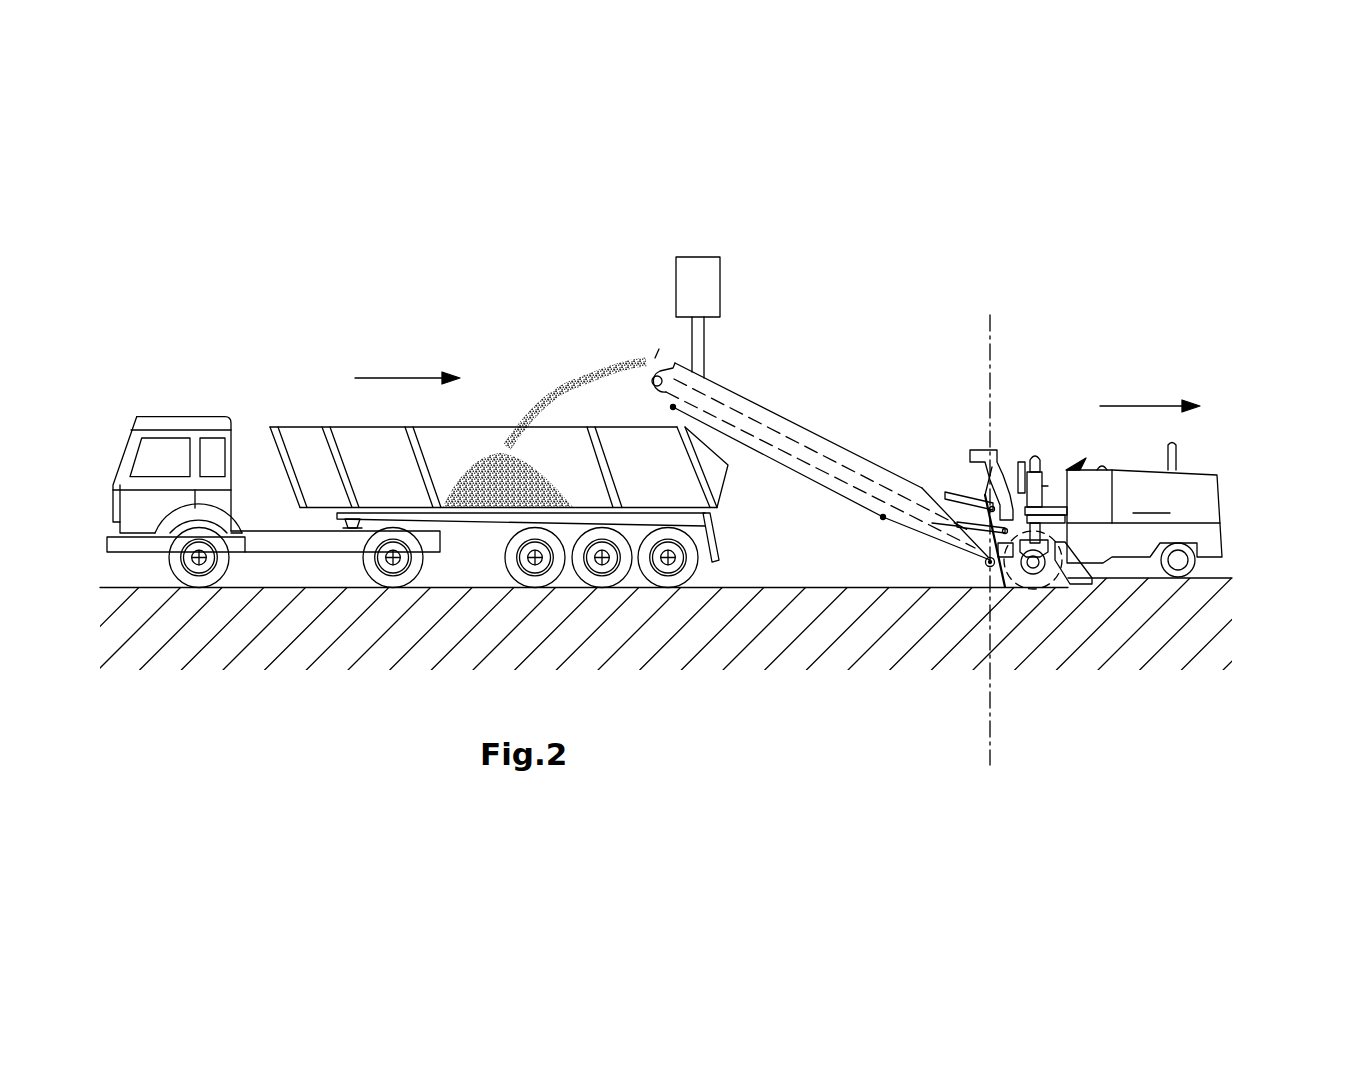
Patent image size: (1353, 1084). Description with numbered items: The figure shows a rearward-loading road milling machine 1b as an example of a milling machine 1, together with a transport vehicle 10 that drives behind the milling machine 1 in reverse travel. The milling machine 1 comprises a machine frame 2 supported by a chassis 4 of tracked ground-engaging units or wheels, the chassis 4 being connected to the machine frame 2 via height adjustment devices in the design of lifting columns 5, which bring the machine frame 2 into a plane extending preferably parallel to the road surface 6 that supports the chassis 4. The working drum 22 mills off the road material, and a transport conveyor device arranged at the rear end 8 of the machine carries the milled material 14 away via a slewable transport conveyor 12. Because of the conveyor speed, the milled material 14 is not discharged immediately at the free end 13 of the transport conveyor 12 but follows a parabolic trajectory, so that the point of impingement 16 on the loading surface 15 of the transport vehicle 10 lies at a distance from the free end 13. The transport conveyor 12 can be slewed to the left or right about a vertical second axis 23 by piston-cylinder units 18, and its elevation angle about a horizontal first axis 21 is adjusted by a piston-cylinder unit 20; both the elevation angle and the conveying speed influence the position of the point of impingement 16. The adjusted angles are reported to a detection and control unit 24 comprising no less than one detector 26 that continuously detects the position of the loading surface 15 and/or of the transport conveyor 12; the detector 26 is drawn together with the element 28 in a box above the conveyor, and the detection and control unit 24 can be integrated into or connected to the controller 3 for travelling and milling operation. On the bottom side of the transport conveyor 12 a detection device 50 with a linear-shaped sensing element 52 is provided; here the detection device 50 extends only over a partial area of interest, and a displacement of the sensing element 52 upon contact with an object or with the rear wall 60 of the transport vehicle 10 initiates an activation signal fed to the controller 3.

The milling machine 1 is at (1095, 531).
The rearward-loading road milling machine 1b is at (1190, 497).
The machine frame 2 is at (1170, 456).
The controller 3 is at (1142, 449).
The detection and control unit 24 is at (1062, 470).
The chassis 4 is at (1232, 564).
The lifting columns 5 is at (1097, 567).
The road surface 6 is at (800, 588).
The rear end 8 is at (952, 440).
The transport vehicle 10 is at (441, 524).
The transport conveyor 12 is at (792, 476).
The free end 13 is at (640, 333).
The milled material 14 is at (563, 380).
The loading surface 15 is at (392, 506).
The point of impingement 16 is at (474, 456).
The piston-cylinder units 18 is at (988, 565).
The piston-cylinder unit 20 is at (947, 497).
The horizontal first axis 21 is at (990, 568).
The working drum 22 is at (1063, 570).
The vertical second axis 23 is at (992, 720).
The detector 26 is at (732, 285).
The detection device 28 is at (707, 275).
The detection device 50 is at (767, 498).
The sensing element 52 is at (820, 490).
The rear wall 60 is at (728, 478).